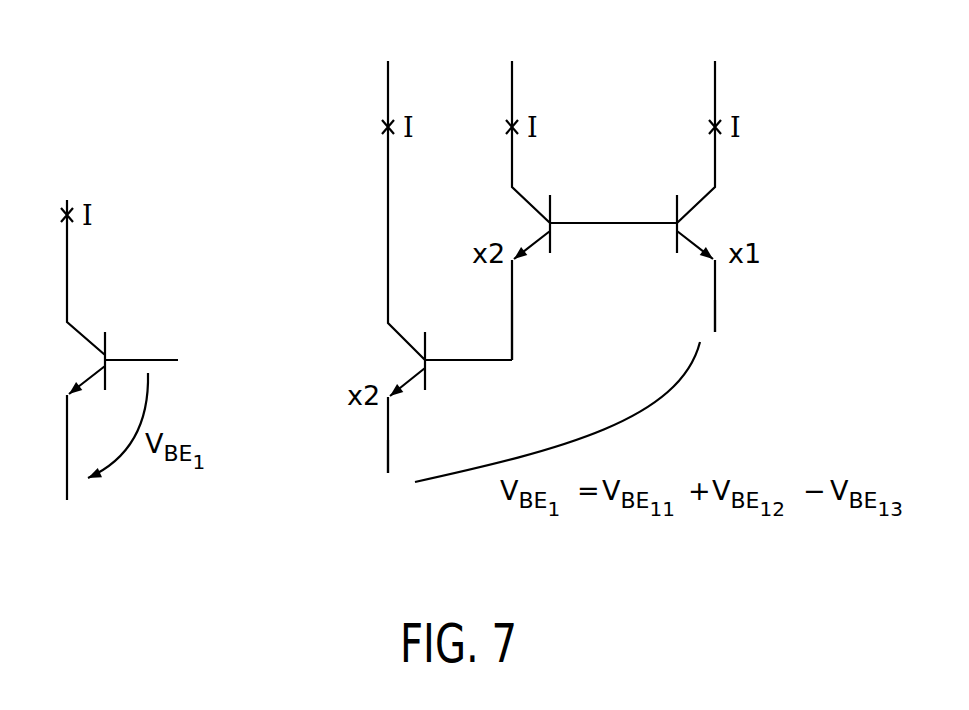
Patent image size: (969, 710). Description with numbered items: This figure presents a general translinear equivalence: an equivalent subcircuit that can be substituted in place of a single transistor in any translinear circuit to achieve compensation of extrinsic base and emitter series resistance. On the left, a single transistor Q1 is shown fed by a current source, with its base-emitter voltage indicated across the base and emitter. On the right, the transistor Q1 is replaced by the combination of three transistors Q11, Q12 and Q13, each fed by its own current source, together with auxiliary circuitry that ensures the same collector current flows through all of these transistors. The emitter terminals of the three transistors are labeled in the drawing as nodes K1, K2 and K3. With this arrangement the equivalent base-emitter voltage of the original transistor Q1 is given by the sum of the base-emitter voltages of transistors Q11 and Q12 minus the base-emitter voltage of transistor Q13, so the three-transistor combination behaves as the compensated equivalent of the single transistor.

The transistor Q1 is at (101, 350).
The transistor Q11 is at (420, 267).
The transistor Q12 is at (565, 210).
The transistor Q13 is at (727, 196).
The node K1 is at (367, 477).
The node K2 is at (535, 320).
The node K3 is at (737, 304).